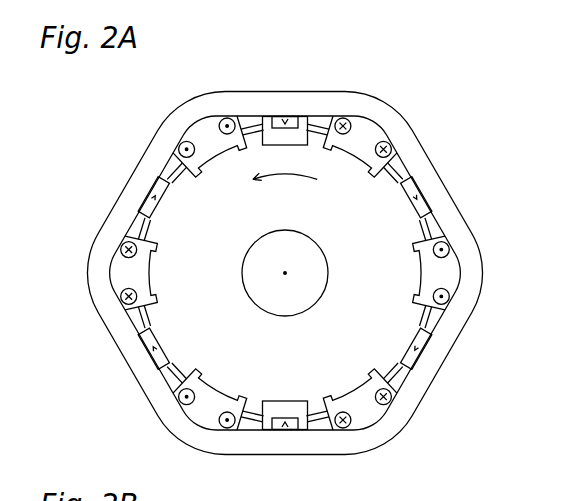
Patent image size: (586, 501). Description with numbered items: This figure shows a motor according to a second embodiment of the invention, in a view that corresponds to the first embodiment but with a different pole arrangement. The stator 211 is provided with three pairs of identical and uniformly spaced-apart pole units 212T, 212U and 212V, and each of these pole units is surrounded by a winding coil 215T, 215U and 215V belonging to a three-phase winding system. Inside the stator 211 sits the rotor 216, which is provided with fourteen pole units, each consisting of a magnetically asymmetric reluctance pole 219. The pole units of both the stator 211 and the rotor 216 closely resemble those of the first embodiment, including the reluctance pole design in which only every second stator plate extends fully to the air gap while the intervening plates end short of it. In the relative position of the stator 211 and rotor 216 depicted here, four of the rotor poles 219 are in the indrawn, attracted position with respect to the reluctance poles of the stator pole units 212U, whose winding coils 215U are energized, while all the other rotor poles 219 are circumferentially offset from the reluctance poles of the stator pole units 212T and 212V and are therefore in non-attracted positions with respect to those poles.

The stator 211 is at (389, 120).
The stator pole unit 212U is at (282, 101).
The stator pole unit 212V is at (133, 184).
The stator pole unit 212T is at (436, 187).
The winding coil 215U is at (347, 118).
The winding coil 215T is at (392, 148).
The winding coil 215V is at (456, 300).
The rotor 216 is at (225, 168).
The reluctance pole 219 is at (110, 260).